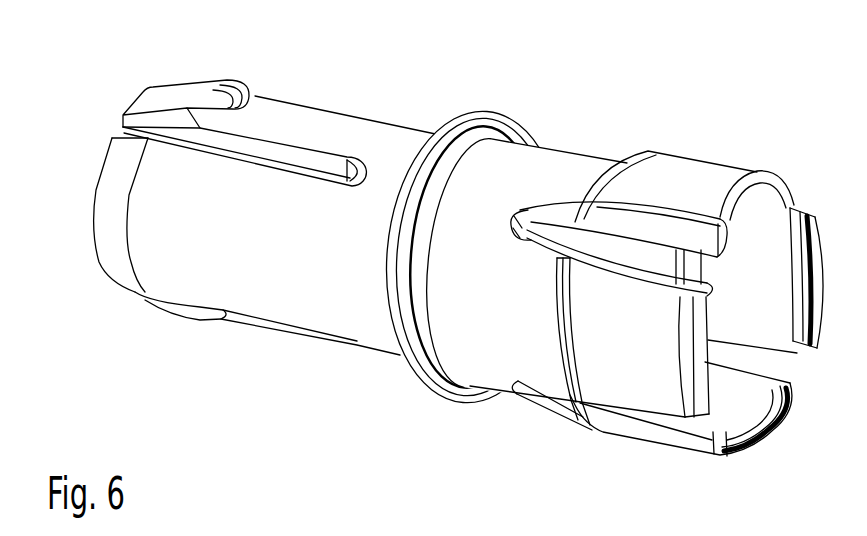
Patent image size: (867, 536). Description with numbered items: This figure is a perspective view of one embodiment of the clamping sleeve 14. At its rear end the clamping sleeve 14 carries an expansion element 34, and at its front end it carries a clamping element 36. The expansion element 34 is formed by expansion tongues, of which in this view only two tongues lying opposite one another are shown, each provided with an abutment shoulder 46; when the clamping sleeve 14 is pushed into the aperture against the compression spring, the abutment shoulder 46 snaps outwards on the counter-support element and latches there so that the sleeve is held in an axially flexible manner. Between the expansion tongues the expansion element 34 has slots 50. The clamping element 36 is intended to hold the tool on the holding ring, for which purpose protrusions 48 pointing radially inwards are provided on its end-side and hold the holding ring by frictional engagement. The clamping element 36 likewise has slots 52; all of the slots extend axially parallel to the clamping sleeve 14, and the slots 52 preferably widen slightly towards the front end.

The clamping sleeve 14 is at (269, 266).
The expansion element 34 is at (207, 361).
The clamping element 36 is at (724, 181).
The abutment shoulder 46 is at (247, 101).
The protrusions 48 is at (782, 243).
The slots 50 is at (281, 150).
The slots 52 is at (648, 253).